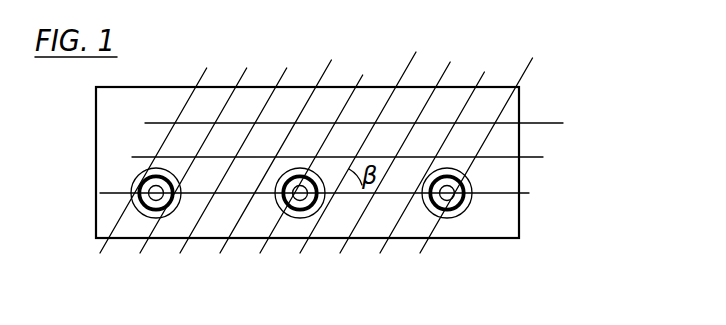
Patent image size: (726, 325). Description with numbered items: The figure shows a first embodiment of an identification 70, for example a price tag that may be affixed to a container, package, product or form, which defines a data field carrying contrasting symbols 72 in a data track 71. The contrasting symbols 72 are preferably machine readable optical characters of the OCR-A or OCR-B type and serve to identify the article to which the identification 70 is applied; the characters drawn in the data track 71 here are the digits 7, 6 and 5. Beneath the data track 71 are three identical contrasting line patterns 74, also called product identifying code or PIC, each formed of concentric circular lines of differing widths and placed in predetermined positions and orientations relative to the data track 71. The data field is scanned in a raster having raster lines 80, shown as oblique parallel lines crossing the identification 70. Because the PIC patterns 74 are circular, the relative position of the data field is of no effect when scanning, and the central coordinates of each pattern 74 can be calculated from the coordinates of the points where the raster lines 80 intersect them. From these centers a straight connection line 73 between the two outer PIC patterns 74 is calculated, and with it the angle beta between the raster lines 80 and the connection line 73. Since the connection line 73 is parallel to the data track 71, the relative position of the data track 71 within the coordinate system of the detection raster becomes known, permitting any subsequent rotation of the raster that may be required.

The identification 70 is at (519, 176).
The data track 71 is at (572, 151).
The contrasting symbols 72 is at (313, 123).
The connection line 73 is at (112, 193).
The contrasting line patterns (PIC patterns) 74 is at (143, 224).
The raster lines 80 is at (441, 72).
The position 5 is at (379, 140).
The position 6 is at (340, 141).
The position 7 is at (308, 140).